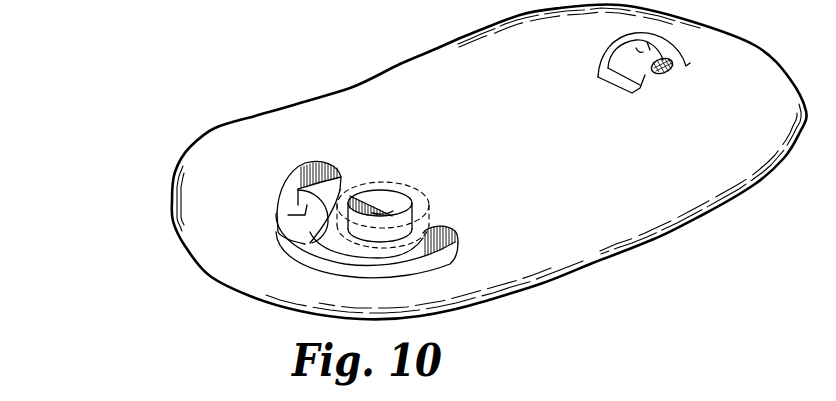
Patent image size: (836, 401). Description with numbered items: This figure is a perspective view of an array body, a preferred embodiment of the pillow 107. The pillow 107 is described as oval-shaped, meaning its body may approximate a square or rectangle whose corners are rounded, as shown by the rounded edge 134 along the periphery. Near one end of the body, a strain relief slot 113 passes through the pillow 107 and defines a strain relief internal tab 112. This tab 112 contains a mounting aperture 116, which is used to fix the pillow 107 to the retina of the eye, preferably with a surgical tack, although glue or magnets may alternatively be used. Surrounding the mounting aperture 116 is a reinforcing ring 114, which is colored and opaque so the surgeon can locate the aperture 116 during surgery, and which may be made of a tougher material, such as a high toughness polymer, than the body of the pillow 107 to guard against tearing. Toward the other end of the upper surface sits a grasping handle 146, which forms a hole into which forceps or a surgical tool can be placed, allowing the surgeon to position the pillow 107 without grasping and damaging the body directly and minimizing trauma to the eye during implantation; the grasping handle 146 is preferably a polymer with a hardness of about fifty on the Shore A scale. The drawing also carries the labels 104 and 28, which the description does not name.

The pad 28 is at (663, 292).
The base 104 is at (195, 143).
The pillow 107 is at (110, 248).
The strain relief internal tab 112 is at (299, 221).
The strain relief slot 113 is at (298, 188).
The reinforcing ring 114 is at (366, 182).
The mounting aperture 116 is at (387, 188).
The rounded edge 134 is at (552, 279).
The grasping handle 146 is at (656, 50).